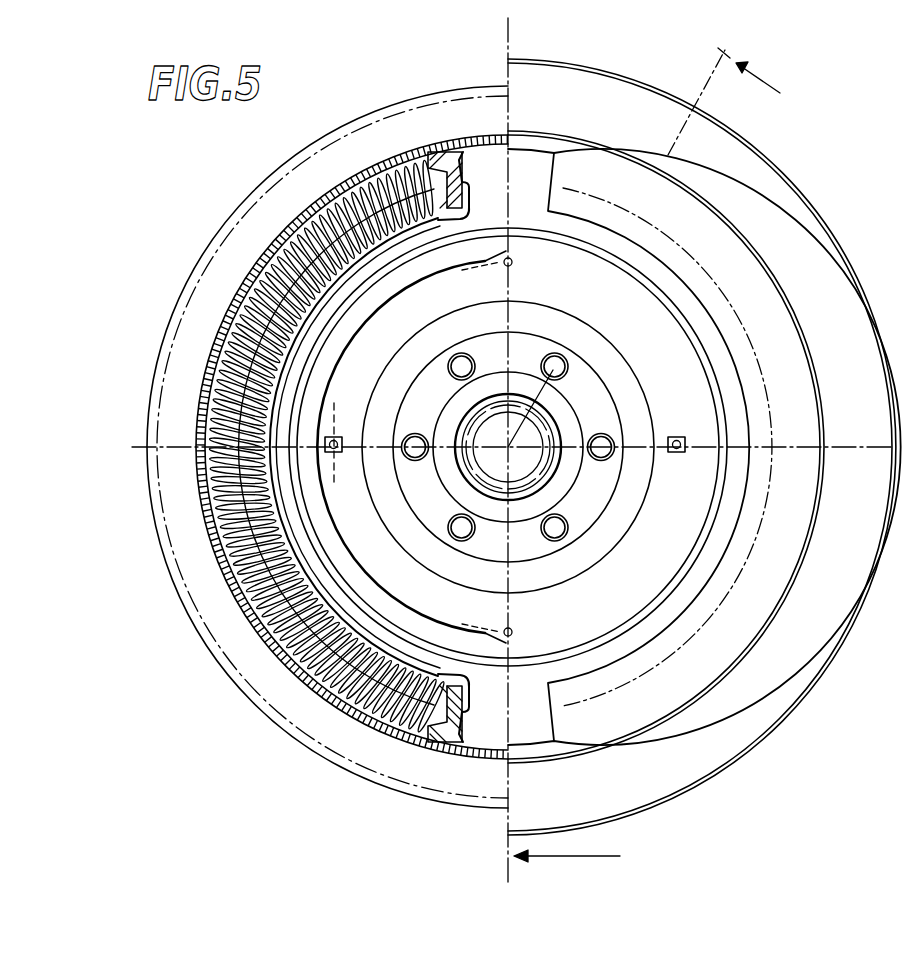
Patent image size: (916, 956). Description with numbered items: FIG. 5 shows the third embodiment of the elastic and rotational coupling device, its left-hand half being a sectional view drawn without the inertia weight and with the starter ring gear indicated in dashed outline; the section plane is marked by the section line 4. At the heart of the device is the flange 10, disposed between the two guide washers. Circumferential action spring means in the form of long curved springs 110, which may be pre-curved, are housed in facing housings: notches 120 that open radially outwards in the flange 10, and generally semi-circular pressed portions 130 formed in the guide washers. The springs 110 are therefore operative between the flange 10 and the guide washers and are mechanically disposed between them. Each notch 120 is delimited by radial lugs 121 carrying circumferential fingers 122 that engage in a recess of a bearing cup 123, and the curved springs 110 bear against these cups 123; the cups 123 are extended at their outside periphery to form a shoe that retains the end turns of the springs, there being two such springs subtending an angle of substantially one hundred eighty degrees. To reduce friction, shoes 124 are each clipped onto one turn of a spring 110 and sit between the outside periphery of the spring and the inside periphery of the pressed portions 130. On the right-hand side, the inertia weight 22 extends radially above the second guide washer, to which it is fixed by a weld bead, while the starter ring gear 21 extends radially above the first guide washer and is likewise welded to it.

The flange 10 is at (290, 668).
The starter ring gear 21 is at (238, 247).
The inertia weight 22 is at (790, 712).
The curved springs 110 is at (255, 640).
The notches 120 is at (333, 700).
The radial lugs 121 is at (470, 147).
The circumferential fingers 122 is at (455, 750).
The bearing cup 123 is at (443, 150).
The shoes 124 is at (230, 562).
The pressed portions 130 is at (327, 184).
The section line 4- 4 is at (661, 463).